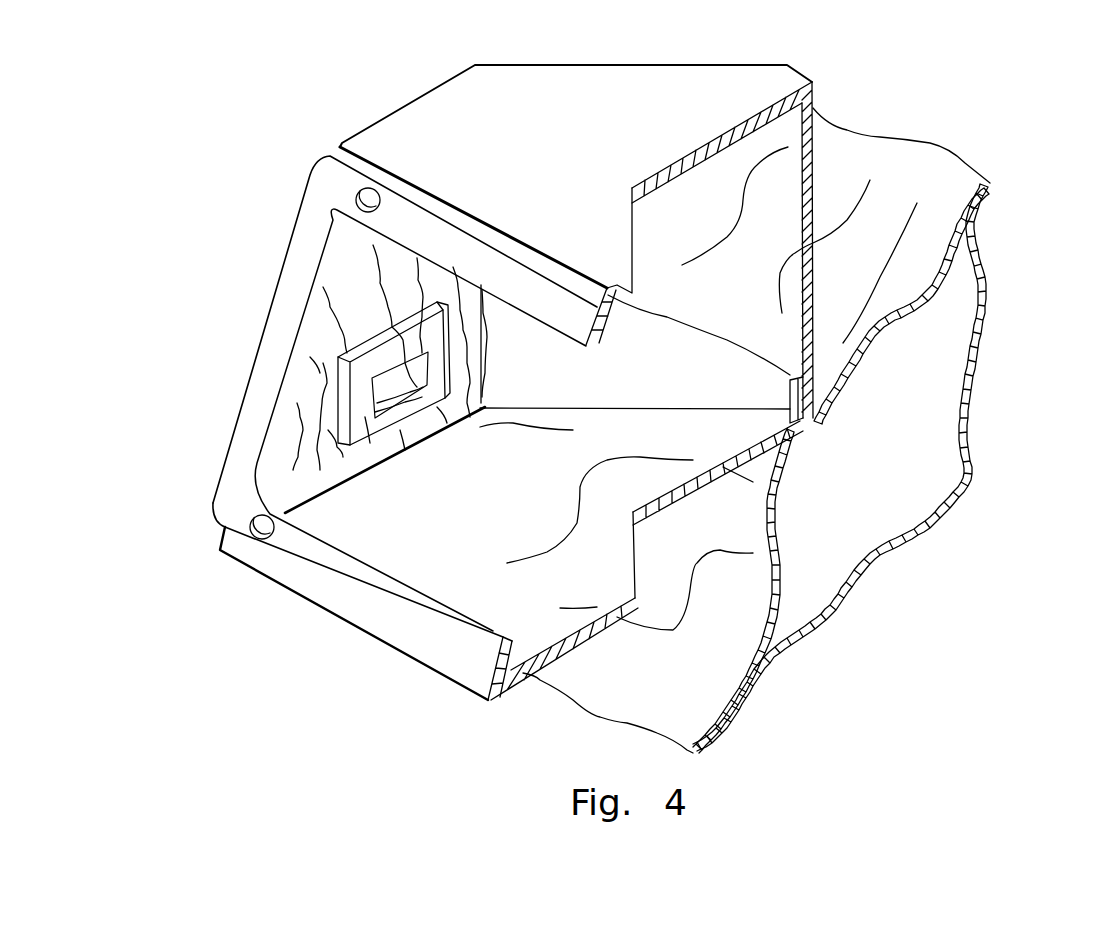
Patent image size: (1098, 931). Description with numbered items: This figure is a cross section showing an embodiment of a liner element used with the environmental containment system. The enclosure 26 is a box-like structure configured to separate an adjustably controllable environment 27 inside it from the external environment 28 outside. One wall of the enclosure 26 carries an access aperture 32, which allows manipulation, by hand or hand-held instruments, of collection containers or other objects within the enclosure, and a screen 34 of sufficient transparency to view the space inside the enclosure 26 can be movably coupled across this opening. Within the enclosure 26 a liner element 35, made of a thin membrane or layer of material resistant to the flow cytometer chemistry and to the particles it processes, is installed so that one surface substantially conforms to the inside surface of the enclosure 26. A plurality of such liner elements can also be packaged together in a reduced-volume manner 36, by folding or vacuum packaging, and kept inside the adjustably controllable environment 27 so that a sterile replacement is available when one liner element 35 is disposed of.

The enclosure 26 is at (628, 105).
The adjustably controllable environment 27 is at (541, 506).
The external environment 28 is at (1085, 341).
The access aperture 32 is at (325, 243).
The screen 34 is at (335, 335).
The liner element 35 is at (860, 153).
The reduced volume package of liner elements 36 is at (343, 415).